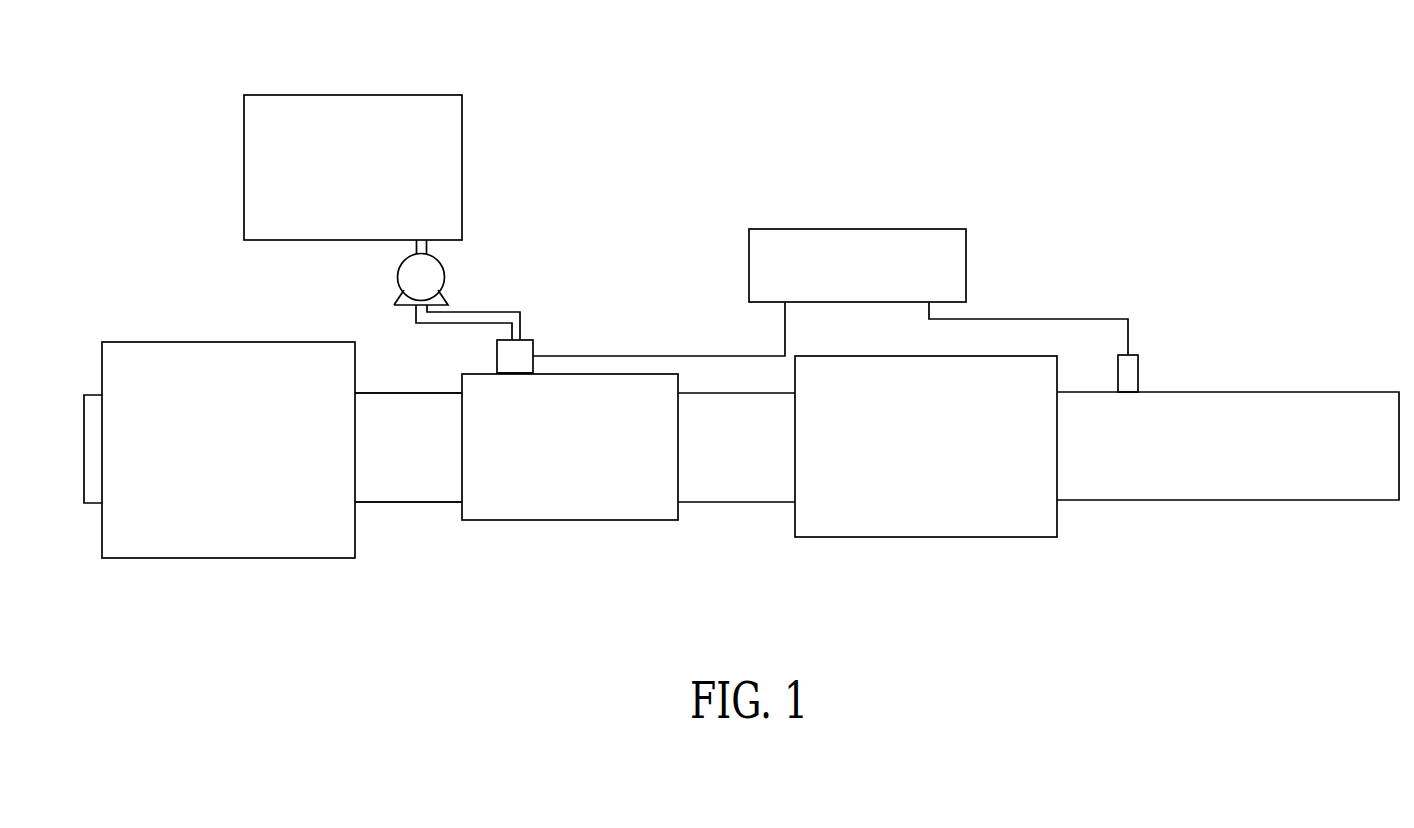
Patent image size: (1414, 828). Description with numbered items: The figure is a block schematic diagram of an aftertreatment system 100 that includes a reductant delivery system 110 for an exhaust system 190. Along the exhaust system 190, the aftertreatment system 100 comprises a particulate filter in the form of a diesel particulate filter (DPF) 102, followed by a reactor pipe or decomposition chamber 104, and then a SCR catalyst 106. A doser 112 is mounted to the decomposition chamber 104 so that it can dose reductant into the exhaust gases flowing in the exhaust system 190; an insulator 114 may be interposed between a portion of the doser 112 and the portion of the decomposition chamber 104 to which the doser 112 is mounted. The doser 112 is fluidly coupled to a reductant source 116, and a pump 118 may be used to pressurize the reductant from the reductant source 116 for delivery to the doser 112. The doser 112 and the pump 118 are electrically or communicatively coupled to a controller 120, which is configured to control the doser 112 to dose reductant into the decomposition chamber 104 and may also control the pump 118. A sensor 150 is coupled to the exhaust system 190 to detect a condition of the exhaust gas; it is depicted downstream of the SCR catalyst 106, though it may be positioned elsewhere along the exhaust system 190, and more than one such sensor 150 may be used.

The aftertreatment system 100 is at (1006, 299).
The diesel particulate filter 102 is at (260, 558).
The decomposition chamber 104 is at (670, 376).
The SCR catalyst 106 is at (935, 538).
The reductant delivery system 110 is at (630, 280).
The doser 112 is at (533, 350).
The insulator 114 is at (497, 368).
The reductant source 116 is at (418, 94).
The pump 118 is at (399, 277).
The controller 120 is at (840, 229).
The sensor 150 is at (1155, 370).
The exhaust system 190 is at (453, 593).